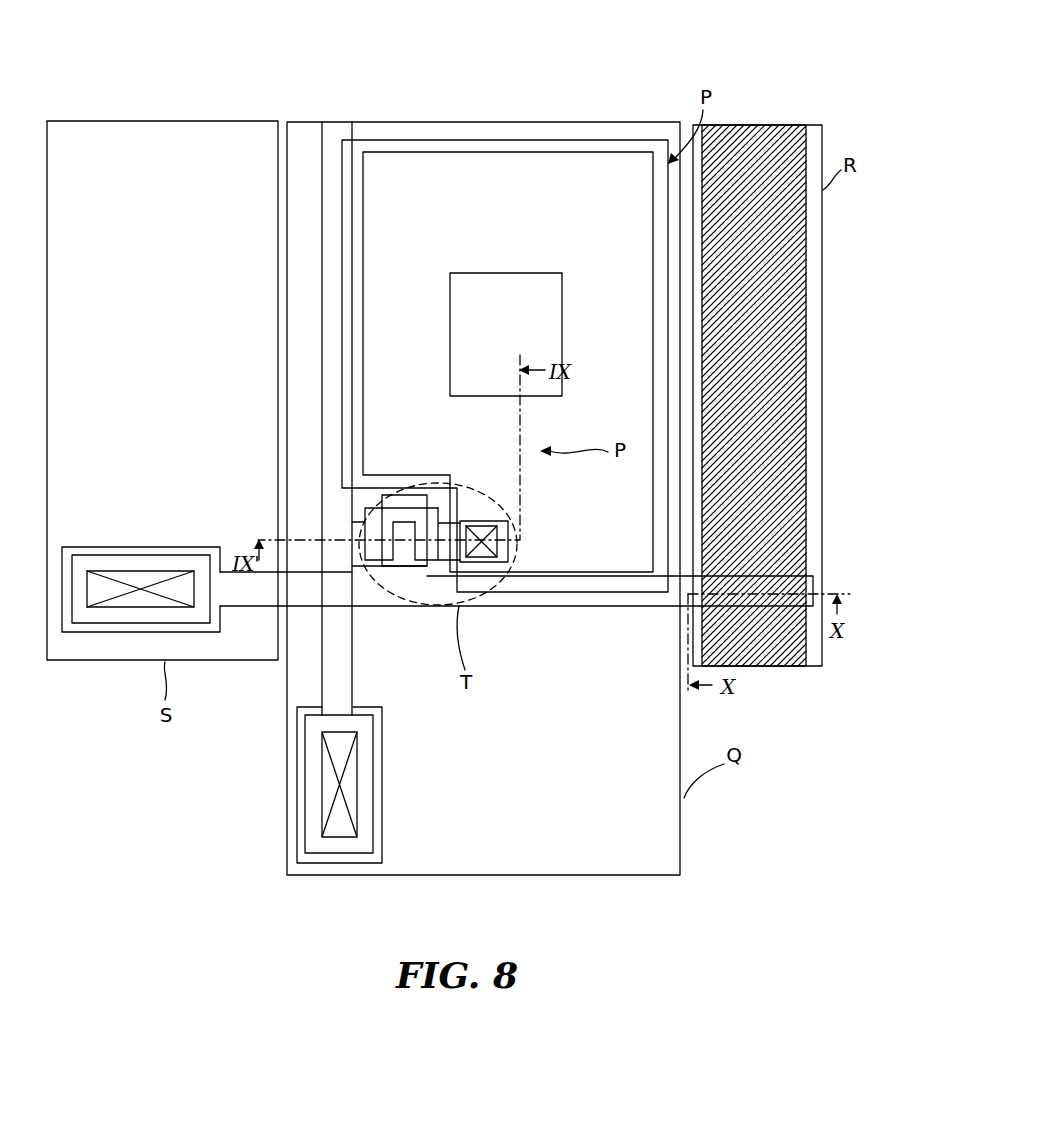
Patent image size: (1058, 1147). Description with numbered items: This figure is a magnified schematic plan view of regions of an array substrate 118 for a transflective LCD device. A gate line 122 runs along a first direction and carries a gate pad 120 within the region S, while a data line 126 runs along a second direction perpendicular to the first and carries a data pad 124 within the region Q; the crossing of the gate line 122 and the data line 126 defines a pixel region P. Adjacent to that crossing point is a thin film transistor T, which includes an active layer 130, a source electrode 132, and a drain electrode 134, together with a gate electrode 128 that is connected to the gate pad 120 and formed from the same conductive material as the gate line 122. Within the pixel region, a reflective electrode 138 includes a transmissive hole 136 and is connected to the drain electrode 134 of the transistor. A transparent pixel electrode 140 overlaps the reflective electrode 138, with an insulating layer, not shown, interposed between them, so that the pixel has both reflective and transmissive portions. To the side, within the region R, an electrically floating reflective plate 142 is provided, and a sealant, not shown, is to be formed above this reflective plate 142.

The array substrate 118 is at (668, 60).
The gate pad 120 is at (84, 555).
The gate line 122 is at (622, 608).
The data pad 124 is at (375, 786).
The data line 126 is at (320, 403).
The gate electrode 128 is at (412, 495).
The active layer 130 is at (418, 564).
The source electrode 132 is at (390, 564).
The drain electrode 134 is at (506, 563).
The transmissive hole 136 is at (522, 272).
The reflective electrode 138 is at (472, 140).
The transparent pixel electrode 140 is at (575, 152).
The electrically floating reflective plate 142 is at (808, 352).